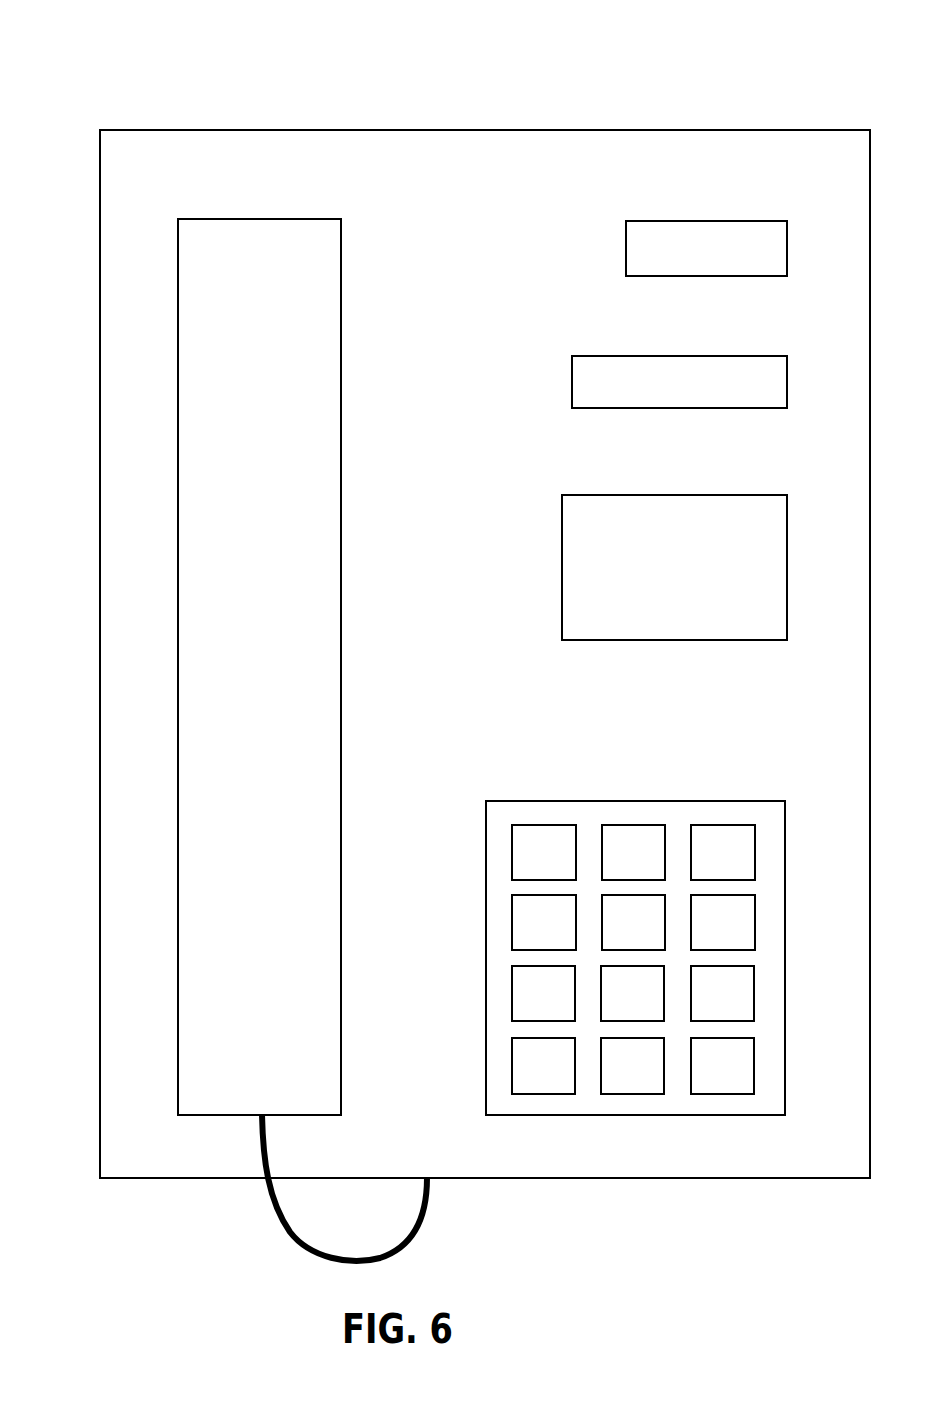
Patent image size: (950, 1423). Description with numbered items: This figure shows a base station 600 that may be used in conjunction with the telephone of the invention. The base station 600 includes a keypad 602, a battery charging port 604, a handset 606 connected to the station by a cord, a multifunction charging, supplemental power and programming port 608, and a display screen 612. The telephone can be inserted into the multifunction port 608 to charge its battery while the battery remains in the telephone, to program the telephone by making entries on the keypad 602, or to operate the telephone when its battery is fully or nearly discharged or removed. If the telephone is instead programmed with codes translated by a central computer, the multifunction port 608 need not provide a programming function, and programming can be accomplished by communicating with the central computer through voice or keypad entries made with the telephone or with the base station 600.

The base station 600 is at (106, 84).
The keypad 602 is at (486, 972).
The battery charging port 604 is at (626, 251).
The handset 606 is at (341, 708).
The multifunction charging, supplemental power and programming port 608 is at (572, 381).
The display screen 612 is at (562, 571).